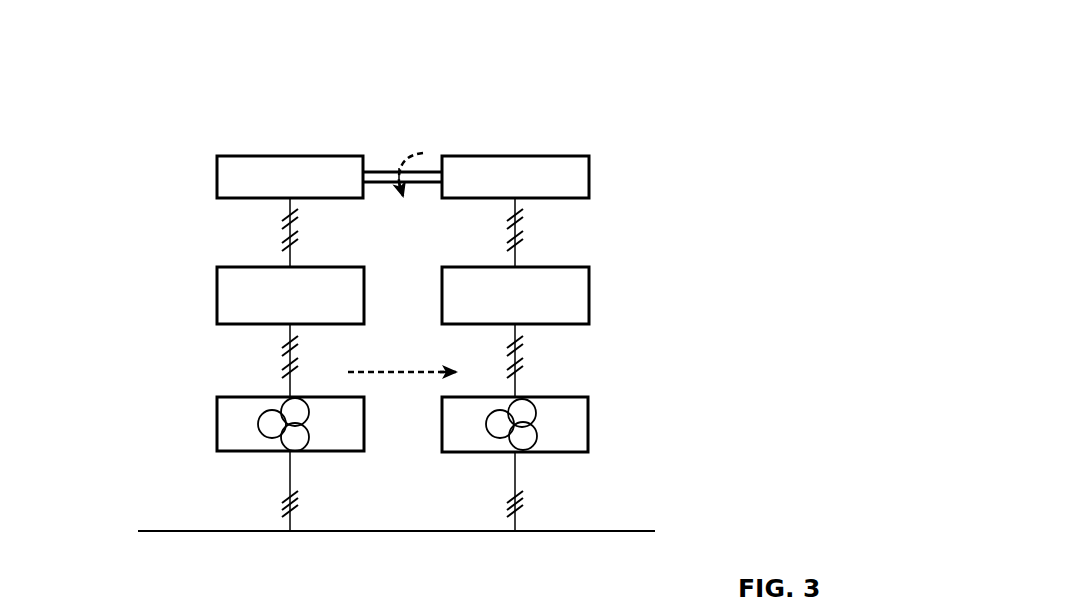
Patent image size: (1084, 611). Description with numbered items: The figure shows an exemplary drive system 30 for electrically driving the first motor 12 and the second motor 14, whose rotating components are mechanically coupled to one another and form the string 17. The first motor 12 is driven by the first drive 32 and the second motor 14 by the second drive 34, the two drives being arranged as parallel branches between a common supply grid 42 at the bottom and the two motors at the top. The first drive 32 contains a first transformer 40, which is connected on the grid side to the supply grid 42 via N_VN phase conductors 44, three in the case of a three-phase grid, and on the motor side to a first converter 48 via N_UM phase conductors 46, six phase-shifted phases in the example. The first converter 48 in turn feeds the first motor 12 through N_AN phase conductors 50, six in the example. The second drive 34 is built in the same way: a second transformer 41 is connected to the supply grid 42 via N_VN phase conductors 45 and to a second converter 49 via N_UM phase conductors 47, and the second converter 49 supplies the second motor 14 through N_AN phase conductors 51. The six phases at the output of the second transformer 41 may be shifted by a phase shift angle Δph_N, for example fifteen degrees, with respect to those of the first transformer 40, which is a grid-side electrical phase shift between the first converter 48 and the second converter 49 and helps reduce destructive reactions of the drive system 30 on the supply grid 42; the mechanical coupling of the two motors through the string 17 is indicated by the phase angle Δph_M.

The first electric motor 12 is at (228, 153).
The second electric motor 14 is at (584, 151).
The string 17 is at (387, 170).
The drive system 30 is at (572, 109).
The first drive 32 is at (136, 485).
The second drive 34 is at (718, 410).
The first transformer 40 is at (227, 391).
The second transformer 41 is at (582, 387).
The supply grid 42 is at (545, 540).
The phase conductors 44 is at (281, 496).
The phase conductors 45 is at (529, 499).
The phase conductors 46 is at (281, 361).
The phase conductors 47 is at (524, 364).
The first converter 48 is at (228, 261).
The second converter 49 is at (582, 259).
The phase conductors 50 is at (280, 236).
The phase conductors 51 is at (534, 236).